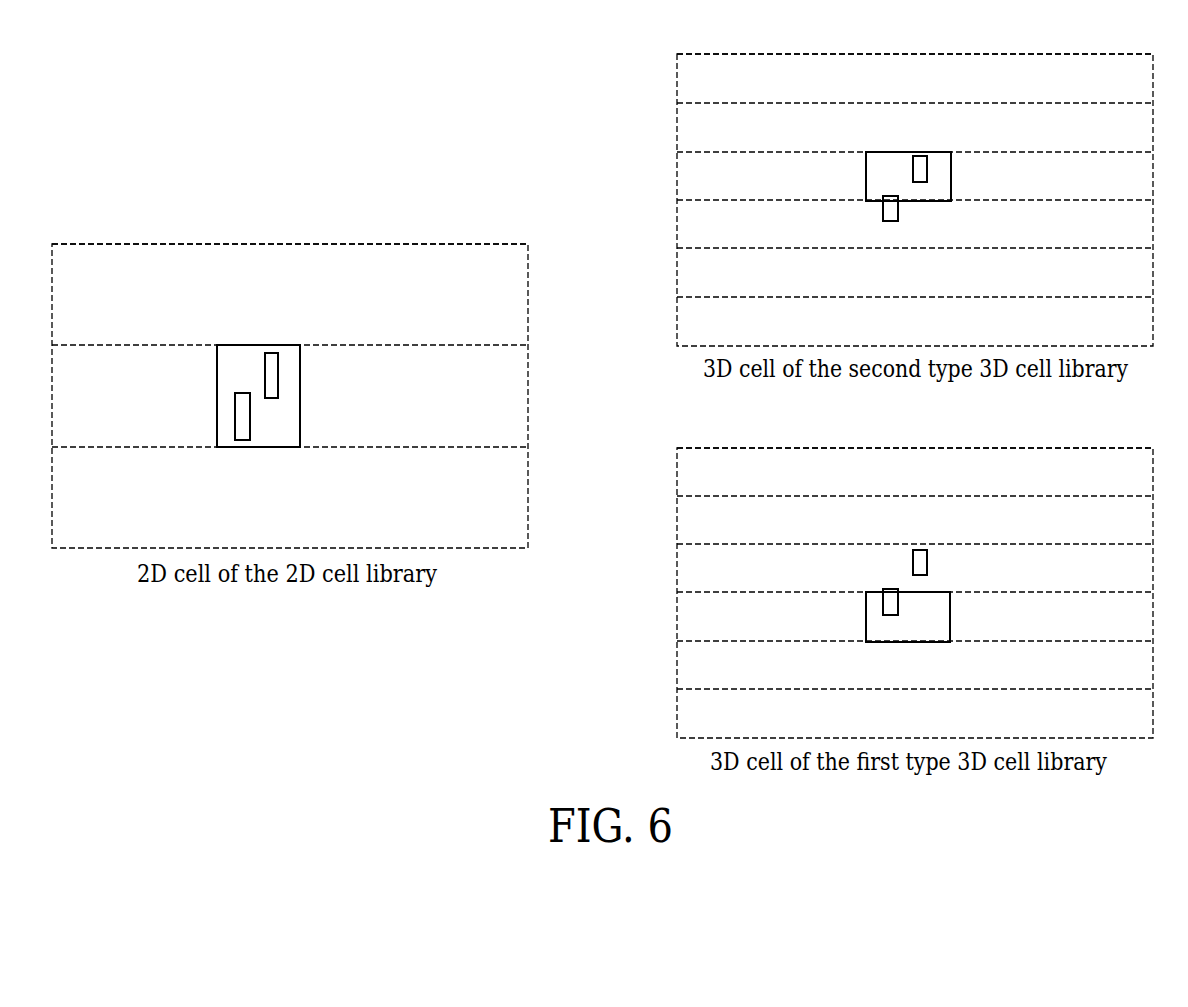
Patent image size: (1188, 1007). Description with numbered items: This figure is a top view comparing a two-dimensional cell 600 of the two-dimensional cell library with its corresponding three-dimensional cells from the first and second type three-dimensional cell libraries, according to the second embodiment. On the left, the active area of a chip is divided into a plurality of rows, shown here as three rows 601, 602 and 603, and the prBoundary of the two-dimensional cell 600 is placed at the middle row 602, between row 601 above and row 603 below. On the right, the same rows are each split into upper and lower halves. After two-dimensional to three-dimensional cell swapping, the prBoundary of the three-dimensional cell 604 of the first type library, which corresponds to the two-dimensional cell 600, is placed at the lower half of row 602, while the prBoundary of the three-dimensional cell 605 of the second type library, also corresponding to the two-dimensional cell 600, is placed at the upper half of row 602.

The 2D cell 600 is at (258, 413).
The row 601 is at (290, 277).
The row 602 is at (290, 379).
The row 603 is at (290, 481).
The 3D cell of the first type 3D cell library 604 is at (908, 632).
The 3D cell of the second type 3D cell library 605 is at (908, 200).